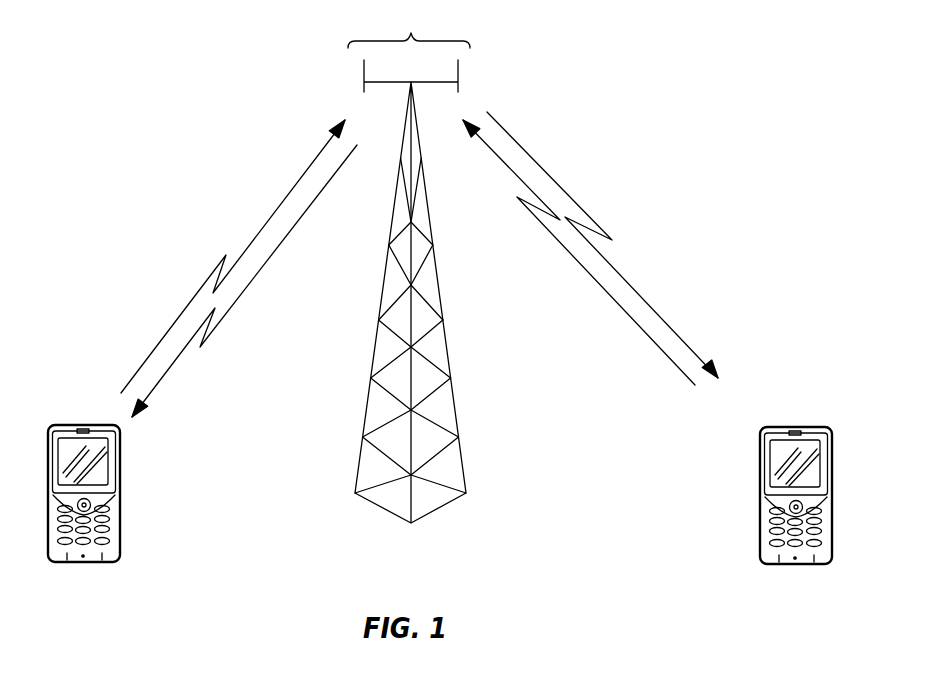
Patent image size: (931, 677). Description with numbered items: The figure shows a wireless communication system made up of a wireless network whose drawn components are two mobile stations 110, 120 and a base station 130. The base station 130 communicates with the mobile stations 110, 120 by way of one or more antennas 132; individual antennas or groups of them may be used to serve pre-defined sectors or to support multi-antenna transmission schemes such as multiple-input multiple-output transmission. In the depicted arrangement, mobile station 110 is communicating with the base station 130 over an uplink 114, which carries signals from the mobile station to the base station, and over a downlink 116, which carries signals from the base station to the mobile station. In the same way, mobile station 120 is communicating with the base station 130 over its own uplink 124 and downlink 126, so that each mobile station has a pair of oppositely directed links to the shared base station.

The mobile station 110 is at (120, 466).
The uplink 114 is at (270, 218).
The downlink 116 is at (243, 292).
The mobile station 120 is at (760, 515).
The uplink 124 is at (620, 310).
The downlink 126 is at (535, 162).
The base station 130 is at (465, 480).
The antennas 132 is at (409, 47).